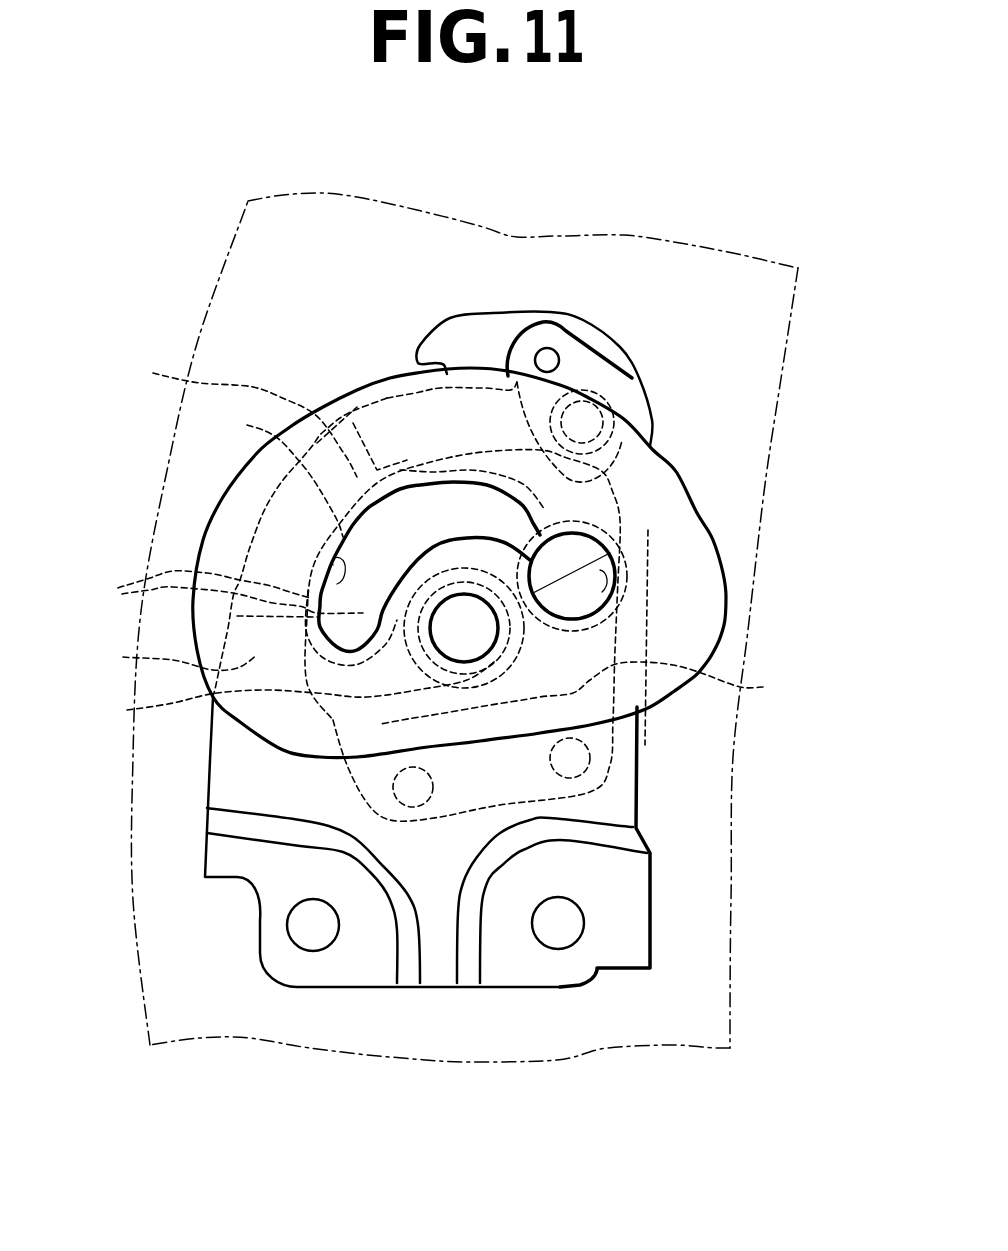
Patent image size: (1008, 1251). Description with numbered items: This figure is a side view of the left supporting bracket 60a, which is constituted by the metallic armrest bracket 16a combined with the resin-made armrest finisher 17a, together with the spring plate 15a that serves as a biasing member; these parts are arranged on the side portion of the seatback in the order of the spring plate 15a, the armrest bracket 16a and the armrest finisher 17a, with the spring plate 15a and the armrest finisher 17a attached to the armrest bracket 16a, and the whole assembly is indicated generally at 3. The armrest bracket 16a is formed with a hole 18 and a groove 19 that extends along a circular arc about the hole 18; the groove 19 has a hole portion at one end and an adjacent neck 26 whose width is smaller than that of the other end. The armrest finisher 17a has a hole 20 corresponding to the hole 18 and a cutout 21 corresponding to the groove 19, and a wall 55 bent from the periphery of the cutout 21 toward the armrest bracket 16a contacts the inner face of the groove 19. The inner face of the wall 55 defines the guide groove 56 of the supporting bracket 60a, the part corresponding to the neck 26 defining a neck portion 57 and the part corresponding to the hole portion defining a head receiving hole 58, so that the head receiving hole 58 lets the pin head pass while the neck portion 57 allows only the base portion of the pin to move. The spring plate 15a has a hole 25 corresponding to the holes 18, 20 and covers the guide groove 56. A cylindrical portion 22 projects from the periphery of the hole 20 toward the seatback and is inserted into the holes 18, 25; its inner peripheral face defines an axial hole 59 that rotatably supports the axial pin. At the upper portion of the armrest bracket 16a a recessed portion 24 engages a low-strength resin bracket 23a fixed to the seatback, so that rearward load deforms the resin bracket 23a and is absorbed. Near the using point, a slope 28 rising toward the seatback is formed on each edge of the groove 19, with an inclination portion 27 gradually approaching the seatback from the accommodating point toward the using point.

The lamp unit 3 is at (133, 450).
The spring plate 15a is at (600, 693).
The armrest bracket 16a is at (647, 800).
The armrest finisher 17a is at (726, 600).
The hole 18 is at (287, 699).
The groove 19 is at (248, 525).
The hole 20 is at (634, 666).
The axial hole 59 is at (488, 650).
The cutout 21 is at (337, 584).
The cylindrical portion 22 is at (522, 632).
The resin bracket 23a is at (583, 352).
The recessed portion 24 is at (653, 415).
The hole 25 is at (548, 726).
The neck 26 is at (560, 527).
The inclination portion 27 is at (220, 594).
The slope 28 is at (163, 660).
The wall 55 is at (303, 472).
The guide groove 56 is at (477, 483).
The neck portion 57 is at (595, 540).
The head receiving hole 58 is at (614, 577).
The supporting bracket 60a is at (672, 927).